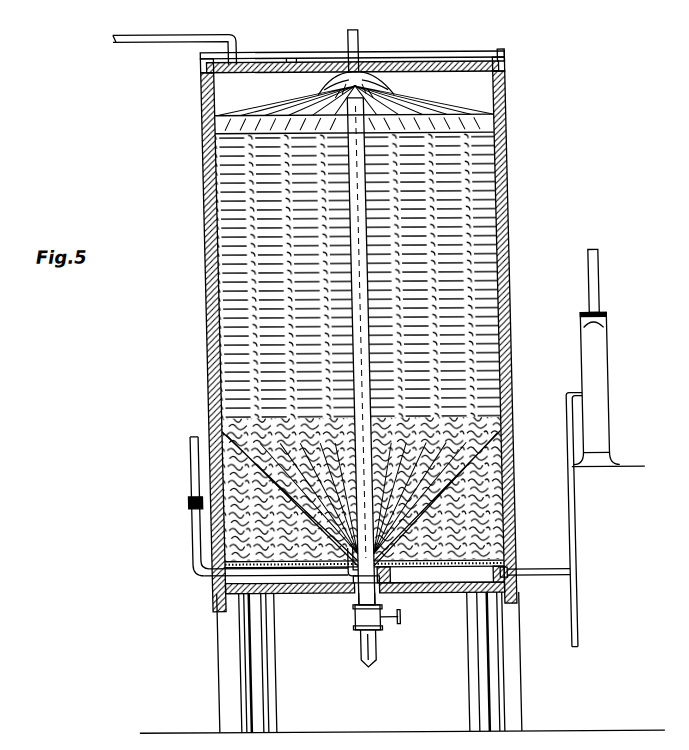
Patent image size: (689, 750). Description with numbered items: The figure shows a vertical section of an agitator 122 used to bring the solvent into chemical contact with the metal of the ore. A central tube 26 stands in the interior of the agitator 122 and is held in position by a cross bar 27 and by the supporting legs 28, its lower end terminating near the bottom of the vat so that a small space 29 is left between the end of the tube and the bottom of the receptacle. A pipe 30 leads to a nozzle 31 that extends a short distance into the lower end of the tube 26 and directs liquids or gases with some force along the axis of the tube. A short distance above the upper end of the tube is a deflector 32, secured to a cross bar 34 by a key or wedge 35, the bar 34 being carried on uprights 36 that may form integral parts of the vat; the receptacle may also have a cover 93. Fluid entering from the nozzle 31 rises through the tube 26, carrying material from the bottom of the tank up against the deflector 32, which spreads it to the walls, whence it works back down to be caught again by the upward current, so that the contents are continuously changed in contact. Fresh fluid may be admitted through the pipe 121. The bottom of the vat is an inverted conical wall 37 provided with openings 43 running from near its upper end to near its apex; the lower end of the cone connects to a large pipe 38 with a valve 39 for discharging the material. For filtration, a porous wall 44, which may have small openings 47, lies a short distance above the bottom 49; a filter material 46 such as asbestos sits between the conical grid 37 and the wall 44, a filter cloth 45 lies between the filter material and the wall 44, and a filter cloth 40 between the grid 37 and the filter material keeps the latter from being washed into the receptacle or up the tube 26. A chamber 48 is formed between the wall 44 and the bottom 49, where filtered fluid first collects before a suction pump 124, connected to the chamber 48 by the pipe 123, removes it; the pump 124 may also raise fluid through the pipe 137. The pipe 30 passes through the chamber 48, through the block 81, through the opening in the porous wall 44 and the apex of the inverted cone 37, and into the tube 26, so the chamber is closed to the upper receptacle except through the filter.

The pipe 121 is at (220, 40).
The cover 93 is at (290, 64).
The key or wedge 35 is at (358, 40).
The deflector 32 is at (375, 65).
The cross bar 34 is at (442, 57).
The uprights 36 is at (201, 63).
The cross bar 27 is at (450, 116).
The agitator 122 is at (497, 196).
The central tube 26 is at (362, 212).
The openings 43 is at (415, 442).
The conical wall 37 is at (467, 422).
The suction pump 124 is at (594, 408).
The filter cloth 40 is at (497, 473).
The filter material 46 is at (228, 490).
The filter cloth 45 is at (495, 542).
The pipe 123 is at (563, 505).
The pipe 30 is at (181, 540).
The chamber 48 is at (503, 562).
The porous wall 44 is at (202, 582).
The space 29 is at (379, 577).
The supporting legs 28 is at (477, 571).
The small openings 47 is at (300, 580).
The bottom 49 is at (444, 588).
The nozzle 31 is at (322, 594).
The large pipe 38 is at (340, 600).
The valve 39 is at (369, 638).
The block 81 is at (338, 612).
The pipe 137 is at (563, 618).